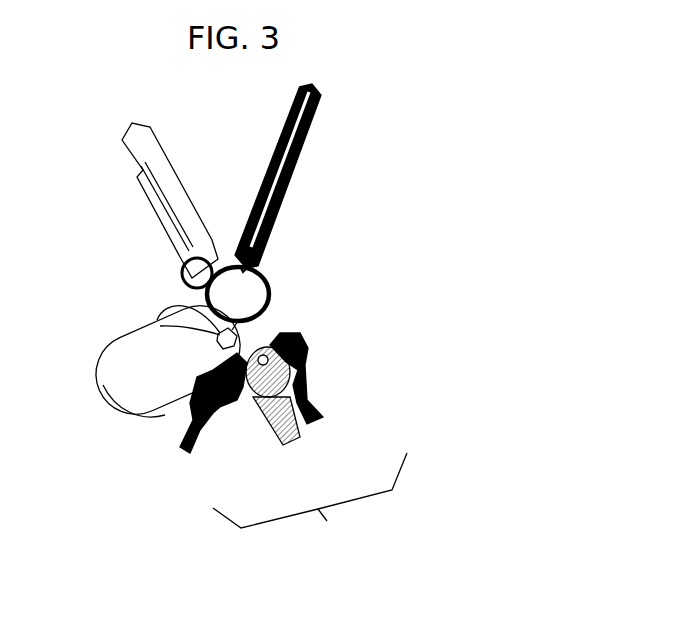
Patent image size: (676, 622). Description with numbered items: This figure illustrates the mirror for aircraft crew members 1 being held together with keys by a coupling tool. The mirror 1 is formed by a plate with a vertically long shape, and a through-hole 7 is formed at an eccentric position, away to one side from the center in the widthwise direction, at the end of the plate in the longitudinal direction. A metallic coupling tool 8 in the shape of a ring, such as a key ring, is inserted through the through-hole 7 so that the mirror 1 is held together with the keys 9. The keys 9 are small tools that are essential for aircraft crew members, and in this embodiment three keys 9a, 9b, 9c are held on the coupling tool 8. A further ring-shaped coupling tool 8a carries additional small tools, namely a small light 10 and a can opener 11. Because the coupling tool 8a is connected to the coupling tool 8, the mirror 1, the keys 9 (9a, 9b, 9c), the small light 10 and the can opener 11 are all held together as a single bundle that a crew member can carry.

The mirror for aircraft crew members 1 is at (125, 341).
The through-hole 7 is at (210, 337).
The coupling tool 8 is at (268, 320).
The ring-shaped coupling tool 8a is at (263, 283).
The keys 9 is at (310, 505).
The key 9a is at (207, 440).
The key 9b is at (287, 447).
The key 9c is at (340, 420).
The small light 10 is at (267, 173).
The can opener 11 is at (150, 203).